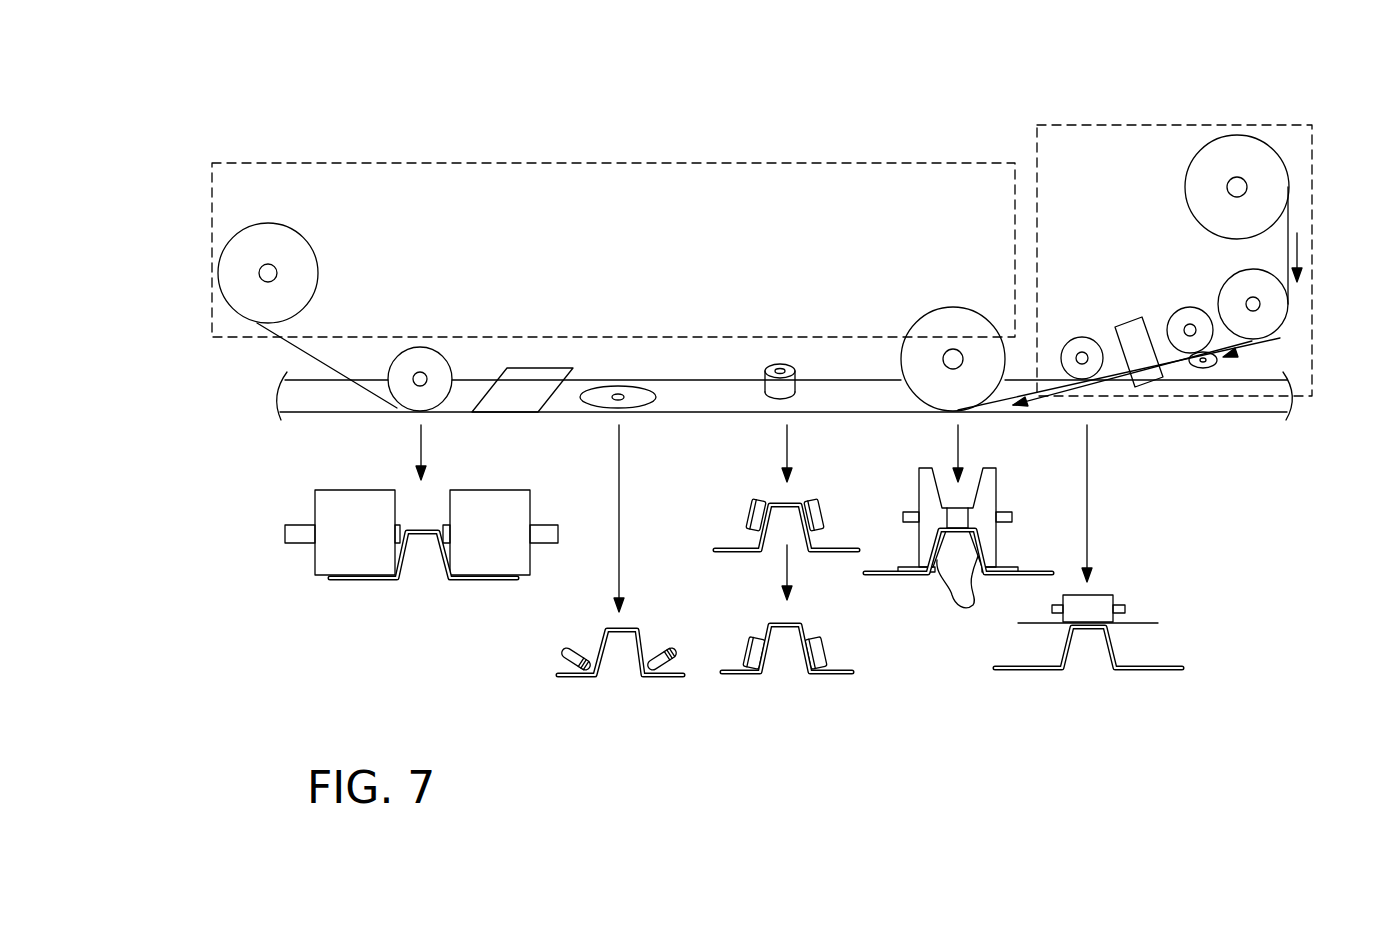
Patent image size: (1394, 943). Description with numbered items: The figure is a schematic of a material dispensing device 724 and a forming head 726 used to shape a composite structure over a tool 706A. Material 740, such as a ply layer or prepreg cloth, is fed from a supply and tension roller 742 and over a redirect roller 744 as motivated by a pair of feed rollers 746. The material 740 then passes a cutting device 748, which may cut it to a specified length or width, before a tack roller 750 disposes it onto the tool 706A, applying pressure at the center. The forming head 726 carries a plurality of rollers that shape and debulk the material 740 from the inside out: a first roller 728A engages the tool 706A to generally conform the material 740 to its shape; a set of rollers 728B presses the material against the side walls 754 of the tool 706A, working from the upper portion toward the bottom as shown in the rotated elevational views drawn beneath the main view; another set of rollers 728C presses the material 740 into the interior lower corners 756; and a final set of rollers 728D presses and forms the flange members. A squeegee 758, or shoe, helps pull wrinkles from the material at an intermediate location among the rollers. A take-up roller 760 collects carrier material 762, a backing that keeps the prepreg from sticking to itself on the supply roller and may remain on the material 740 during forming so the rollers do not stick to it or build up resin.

The material dispensing device 724 is at (1150, 72).
The forming head 726 is at (456, 132).
The tool 706A is at (1060, 405).
The first roller 728A is at (958, 308).
The set of rollers 728B is at (788, 364).
The set of rollers 728C is at (640, 399).
The set of rollers 728D is at (438, 345).
The material 740 is at (1290, 227).
The supply and tension roller 742 is at (1263, 137).
The redirect roller 744 is at (1287, 317).
The feed rollers 746 is at (1170, 317).
The cutting device 748 is at (1157, 388).
The tack roller 750 is at (1098, 345).
The side walls 754 is at (972, 596).
The interior lower corners 756 is at (633, 678).
The squeegee 758 is at (547, 367).
The take-up roller 760 is at (312, 247).
The carrier material 762 is at (287, 343).